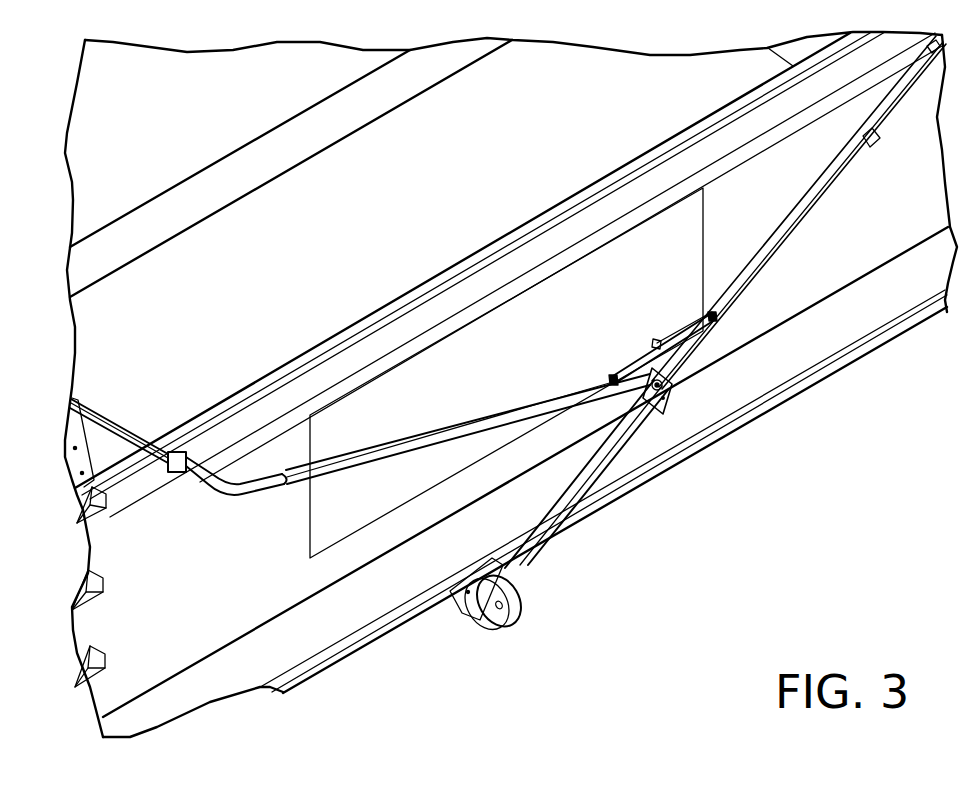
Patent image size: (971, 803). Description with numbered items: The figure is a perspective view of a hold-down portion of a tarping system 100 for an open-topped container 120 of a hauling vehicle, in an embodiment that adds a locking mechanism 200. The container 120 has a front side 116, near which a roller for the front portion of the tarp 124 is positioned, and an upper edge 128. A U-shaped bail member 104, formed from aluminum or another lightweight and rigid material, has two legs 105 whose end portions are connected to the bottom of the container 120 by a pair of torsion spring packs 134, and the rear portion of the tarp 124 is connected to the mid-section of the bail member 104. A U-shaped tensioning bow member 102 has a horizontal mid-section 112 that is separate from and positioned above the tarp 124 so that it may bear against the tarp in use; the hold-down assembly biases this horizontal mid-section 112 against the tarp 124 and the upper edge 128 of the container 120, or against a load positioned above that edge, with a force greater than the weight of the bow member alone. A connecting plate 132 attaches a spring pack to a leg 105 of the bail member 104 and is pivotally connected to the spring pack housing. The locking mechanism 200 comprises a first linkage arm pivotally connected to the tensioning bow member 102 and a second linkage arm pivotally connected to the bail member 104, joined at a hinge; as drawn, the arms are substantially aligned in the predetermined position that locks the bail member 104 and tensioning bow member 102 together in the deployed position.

The tarping system 100 is at (547, 654).
The tensioning bow member 102 is at (455, 420).
The bail member 104 is at (552, 540).
The legs 105 is at (773, 243).
The horizontal mid-section 112 is at (112, 417).
The front side 116 is at (153, 737).
The open-topped container 120 is at (333, 665).
The tarp 124 is at (717, 90).
The upper edge 128 is at (343, 336).
The connecting plate 132 is at (670, 403).
The torsion spring packs 134 is at (513, 604).
The locking mechanism 200 is at (662, 314).